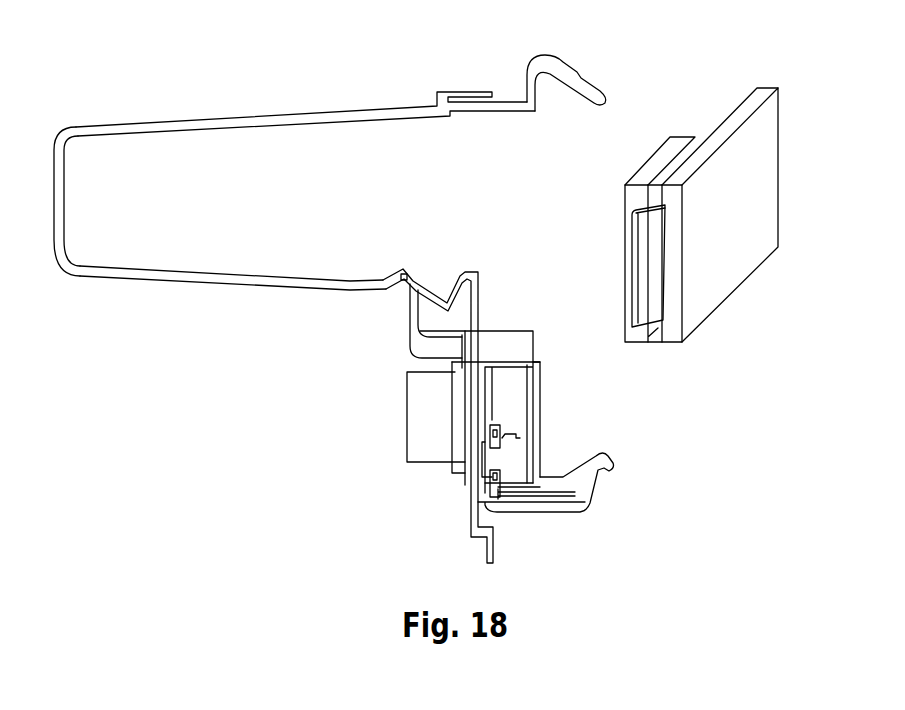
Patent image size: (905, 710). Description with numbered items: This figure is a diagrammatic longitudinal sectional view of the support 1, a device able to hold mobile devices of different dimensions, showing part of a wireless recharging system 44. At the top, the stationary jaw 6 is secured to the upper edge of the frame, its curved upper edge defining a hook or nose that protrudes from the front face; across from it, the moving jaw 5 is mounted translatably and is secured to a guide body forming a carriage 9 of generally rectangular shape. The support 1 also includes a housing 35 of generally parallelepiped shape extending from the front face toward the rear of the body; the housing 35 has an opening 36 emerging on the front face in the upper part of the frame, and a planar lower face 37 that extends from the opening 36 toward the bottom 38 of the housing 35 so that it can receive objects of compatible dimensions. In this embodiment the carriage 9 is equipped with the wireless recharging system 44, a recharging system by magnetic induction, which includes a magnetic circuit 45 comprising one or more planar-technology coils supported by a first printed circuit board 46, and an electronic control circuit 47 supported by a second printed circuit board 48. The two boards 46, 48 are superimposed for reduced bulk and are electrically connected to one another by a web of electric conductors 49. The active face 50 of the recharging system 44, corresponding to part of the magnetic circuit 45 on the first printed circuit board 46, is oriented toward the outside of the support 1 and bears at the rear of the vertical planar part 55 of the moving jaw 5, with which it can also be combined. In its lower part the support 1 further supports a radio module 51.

The support 1 is at (316, 106).
The moving jaw 5 is at (582, 507).
The stationary jaw 6 is at (568, 66).
The carriage 9 is at (500, 513).
The housing 35 is at (330, 175).
The opening 36 is at (470, 219).
The planar lower face 37 is at (203, 270).
The bottom 38 is at (63, 188).
The wireless recharging system 44 is at (506, 324).
The magnetic circuit 45 is at (702, 209).
The first printed circuit board 46 is at (766, 88).
The electronic control circuit 47 is at (650, 176).
The second printed circuit board 48 is at (643, 176).
The web of electric conductors 49 is at (655, 300).
The active face 50 is at (740, 201).
The radio module 51 is at (427, 453).
The vertical planar part 55 is at (542, 432).